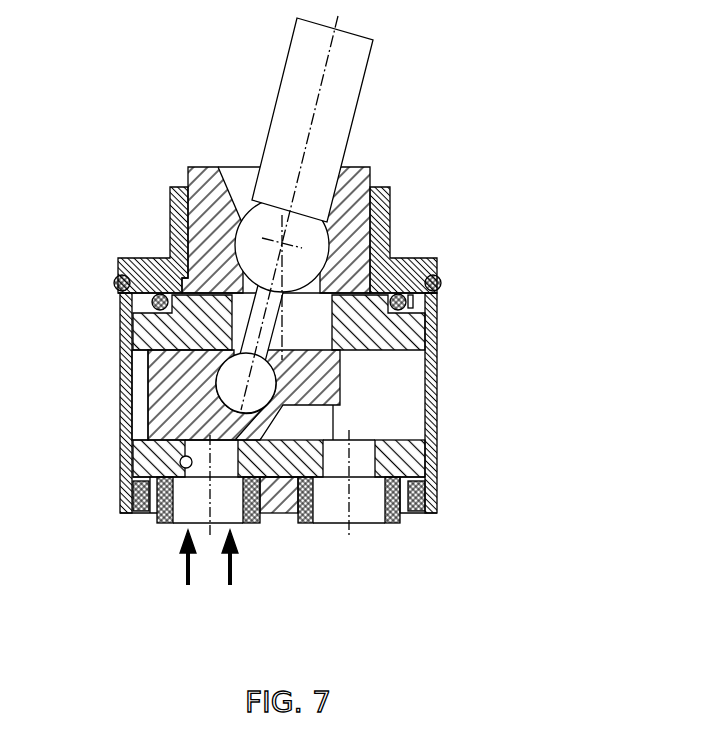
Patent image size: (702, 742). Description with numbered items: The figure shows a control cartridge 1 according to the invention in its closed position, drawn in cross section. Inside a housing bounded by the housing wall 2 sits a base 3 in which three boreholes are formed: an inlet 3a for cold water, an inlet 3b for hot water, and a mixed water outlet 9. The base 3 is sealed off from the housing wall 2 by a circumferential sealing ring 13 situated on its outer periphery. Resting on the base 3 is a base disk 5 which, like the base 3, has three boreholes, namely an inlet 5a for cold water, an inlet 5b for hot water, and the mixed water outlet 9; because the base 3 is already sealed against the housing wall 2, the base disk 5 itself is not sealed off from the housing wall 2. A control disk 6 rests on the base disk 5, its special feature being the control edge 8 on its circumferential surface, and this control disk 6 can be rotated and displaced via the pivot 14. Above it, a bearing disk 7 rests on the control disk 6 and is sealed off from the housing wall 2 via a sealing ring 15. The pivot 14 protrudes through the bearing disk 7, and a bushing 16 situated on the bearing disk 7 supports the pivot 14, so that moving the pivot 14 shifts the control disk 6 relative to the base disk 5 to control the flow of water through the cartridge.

The control cartridge 1 is at (530, 251).
The housing wall 2 is at (437, 386).
The base 3 is at (283, 514).
The inlet for cold water 3a is at (179, 584).
The inlet for hot water 3b is at (233, 592).
The base disk 5 is at (425, 452).
The inlet for cold water 5a is at (183, 462).
The inlet for hot water 5b is at (186, 462).
The control disk 6 is at (148, 381).
The bearing disk 7 is at (133, 329).
The control edge 8 is at (148, 424).
The mixed water outlet 9 is at (372, 446).
The sealing ring 13 is at (434, 492).
The pivot 14 is at (366, 70).
The sealing ring 15 is at (409, 258).
The bushing 16 is at (370, 174).